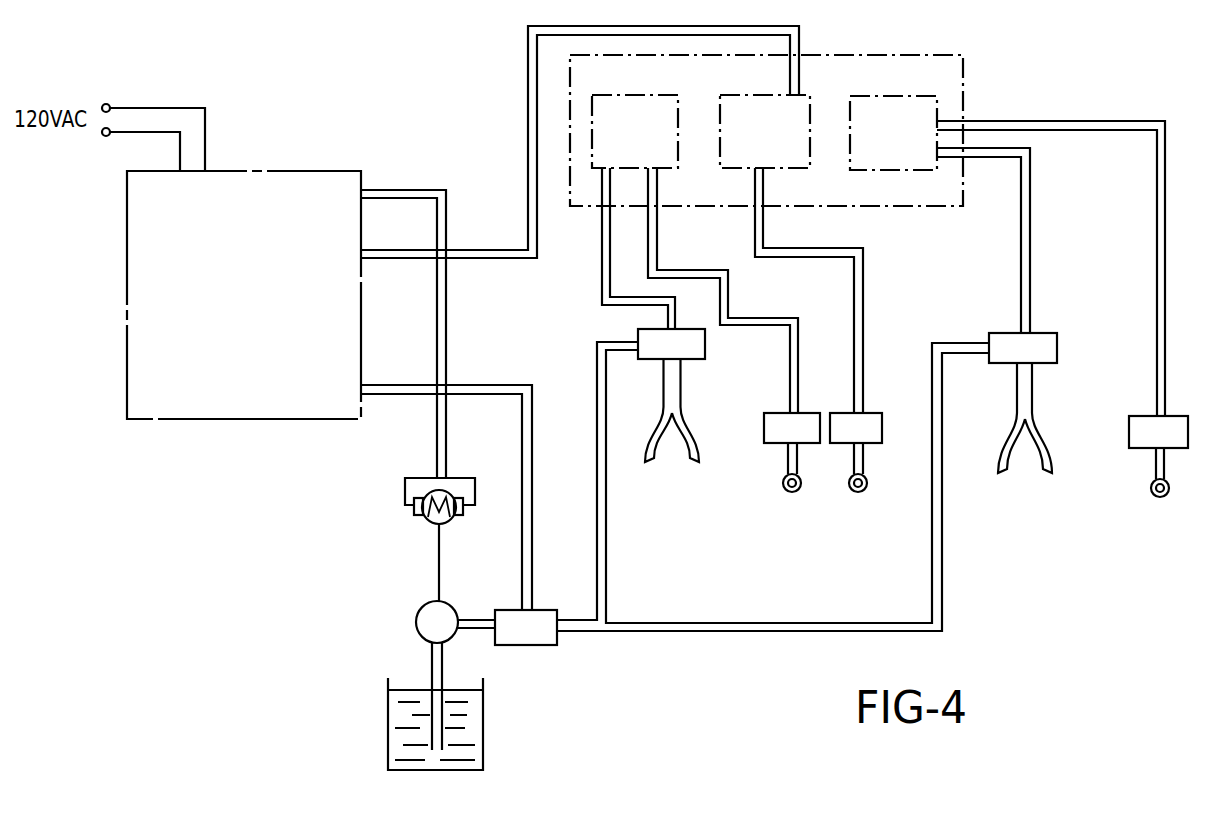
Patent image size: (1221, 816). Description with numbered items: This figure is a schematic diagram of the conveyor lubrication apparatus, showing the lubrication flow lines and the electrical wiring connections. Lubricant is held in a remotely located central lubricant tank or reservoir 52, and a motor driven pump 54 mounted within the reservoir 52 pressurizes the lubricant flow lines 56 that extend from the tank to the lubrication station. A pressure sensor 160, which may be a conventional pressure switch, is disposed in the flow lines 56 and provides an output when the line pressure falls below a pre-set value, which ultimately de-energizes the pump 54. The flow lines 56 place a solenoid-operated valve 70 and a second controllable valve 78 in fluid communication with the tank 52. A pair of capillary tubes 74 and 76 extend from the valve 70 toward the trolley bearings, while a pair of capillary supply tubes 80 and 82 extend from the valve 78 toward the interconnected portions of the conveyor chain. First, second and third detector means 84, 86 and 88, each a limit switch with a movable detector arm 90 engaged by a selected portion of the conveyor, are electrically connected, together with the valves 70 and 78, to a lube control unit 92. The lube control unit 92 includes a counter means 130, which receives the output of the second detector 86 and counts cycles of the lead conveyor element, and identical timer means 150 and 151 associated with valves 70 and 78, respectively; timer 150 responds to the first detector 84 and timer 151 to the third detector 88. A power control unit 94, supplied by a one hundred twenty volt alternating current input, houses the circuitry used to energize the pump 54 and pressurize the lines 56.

The central lubricant tank or reservoir 52 is at (398, 712).
The motor driven pump 54 is at (415, 620).
The lubricant flow lines 56 is at (597, 557).
The solenoid-operated valve 70 is at (705, 352).
The capillary tube 74 is at (664, 398).
The capillary tube 76 is at (683, 400).
The second controllable valve means 78 is at (1083, 322).
The capillary supply tube 80 is at (1013, 405).
The capillary supply tube 82 is at (1036, 404).
The first detector means 84 is at (814, 419).
The second detector means 86 is at (872, 418).
The third detector means 88 is at (1216, 400).
The movable detector arm 90 is at (1152, 497).
The lube control unit 92 is at (958, 84).
The power control unit 94 is at (132, 309).
The counter means 130 is at (781, 164).
The timer means 150 is at (650, 164).
The timer means 151 is at (910, 166).
The pressure sensor 160 is at (547, 637).